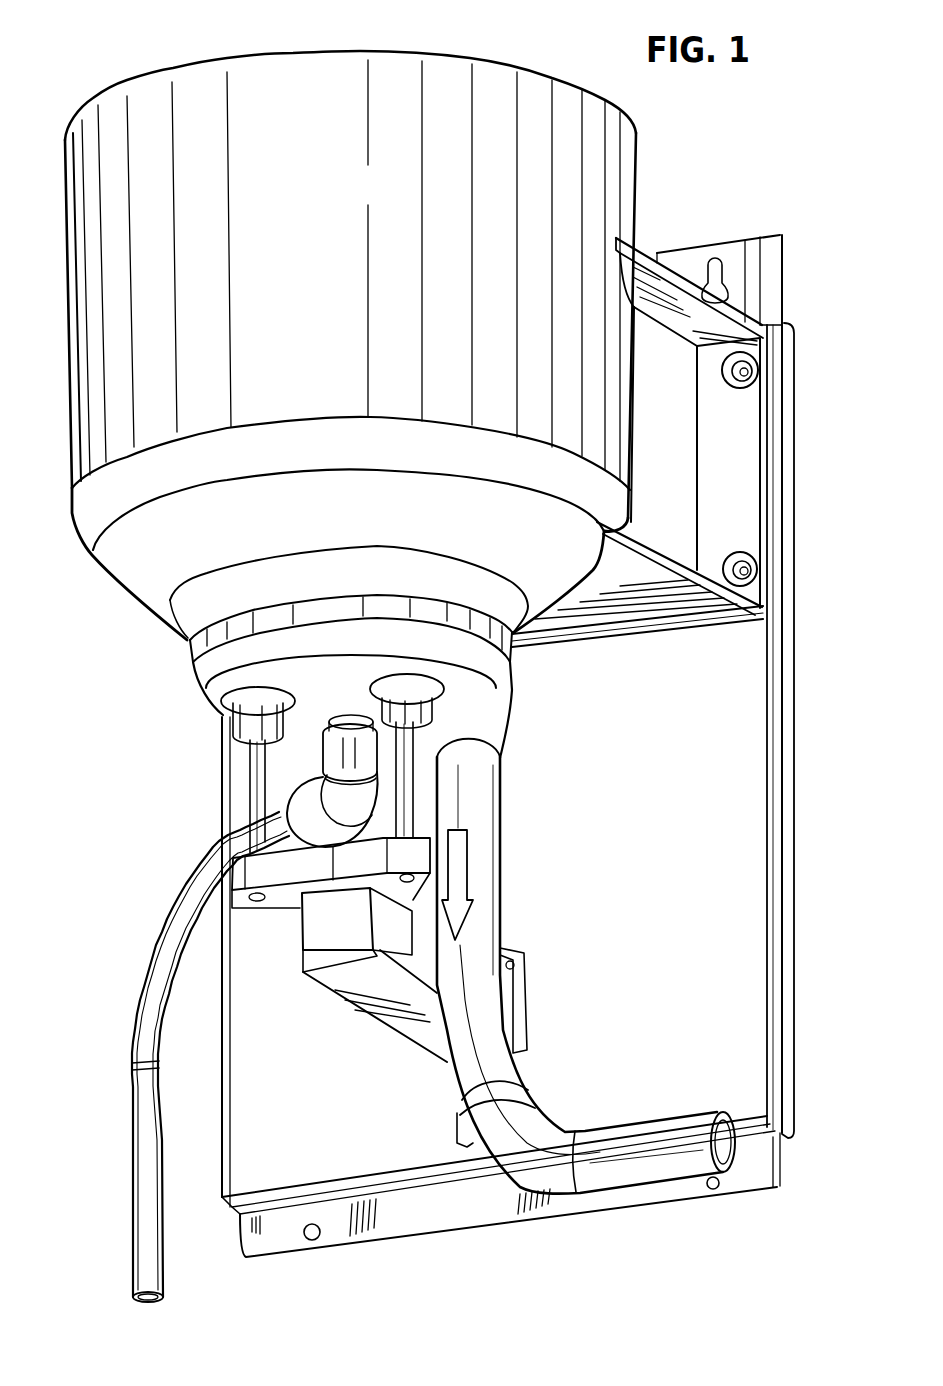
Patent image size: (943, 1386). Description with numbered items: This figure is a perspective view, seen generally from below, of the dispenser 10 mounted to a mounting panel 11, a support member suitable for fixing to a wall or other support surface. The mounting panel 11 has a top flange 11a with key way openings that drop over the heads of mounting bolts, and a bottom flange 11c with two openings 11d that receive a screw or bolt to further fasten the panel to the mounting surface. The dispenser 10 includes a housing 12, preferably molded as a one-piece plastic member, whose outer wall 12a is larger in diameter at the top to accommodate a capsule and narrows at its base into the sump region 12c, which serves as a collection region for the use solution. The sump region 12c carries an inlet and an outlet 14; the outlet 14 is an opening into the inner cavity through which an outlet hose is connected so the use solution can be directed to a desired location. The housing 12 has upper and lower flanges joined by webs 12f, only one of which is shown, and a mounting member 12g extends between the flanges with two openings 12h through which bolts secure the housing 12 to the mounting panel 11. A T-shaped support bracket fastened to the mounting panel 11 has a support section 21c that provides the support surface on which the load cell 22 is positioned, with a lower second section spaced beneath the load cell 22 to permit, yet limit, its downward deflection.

The dispenser 10 is at (135, 64).
The mounting panel 11 is at (740, 900).
The top flange 11a is at (737, 257).
The bottom flange 11c is at (433, 1218).
The openings 11d is at (716, 1188).
The housing 12 is at (93, 290).
The outer wall 12a is at (366, 196).
The sump region 12c is at (188, 660).
The webs 12f is at (682, 429).
The mounting member 12g is at (748, 484).
The openings 12h is at (740, 368).
The outlet 14 is at (497, 747).
The support section 21c is at (377, 1007).
The load cell 22 is at (323, 933).